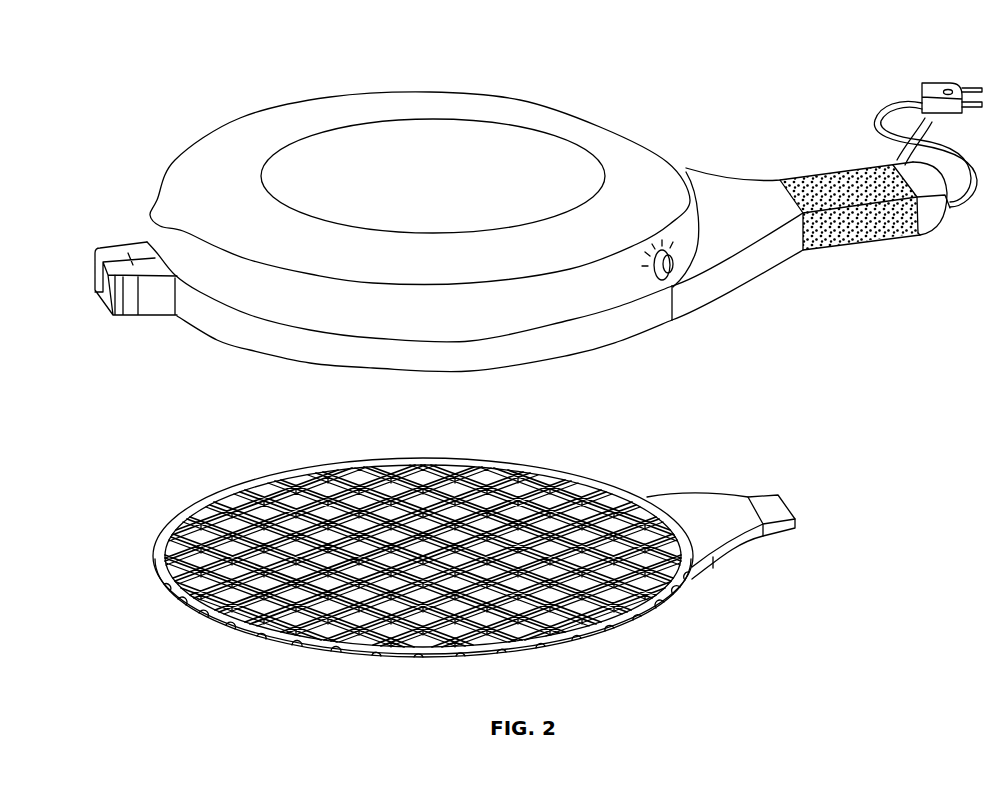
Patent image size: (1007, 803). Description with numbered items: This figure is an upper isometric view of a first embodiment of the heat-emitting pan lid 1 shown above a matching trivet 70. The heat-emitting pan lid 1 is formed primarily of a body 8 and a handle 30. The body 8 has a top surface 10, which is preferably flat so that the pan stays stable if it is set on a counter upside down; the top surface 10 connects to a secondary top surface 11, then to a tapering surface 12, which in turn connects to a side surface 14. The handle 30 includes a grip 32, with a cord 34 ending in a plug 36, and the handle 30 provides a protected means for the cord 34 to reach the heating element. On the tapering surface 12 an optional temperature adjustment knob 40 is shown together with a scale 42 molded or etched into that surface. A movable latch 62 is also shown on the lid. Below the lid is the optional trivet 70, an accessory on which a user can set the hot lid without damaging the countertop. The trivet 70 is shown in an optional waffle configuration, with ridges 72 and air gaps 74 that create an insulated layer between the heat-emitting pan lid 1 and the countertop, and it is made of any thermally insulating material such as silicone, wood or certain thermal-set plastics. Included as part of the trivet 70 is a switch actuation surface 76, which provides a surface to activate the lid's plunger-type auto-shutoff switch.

The heat-emitting pan lid 1 is at (722, 86).
The body 8 is at (224, 128).
The top surface 10 is at (343, 152).
The secondary top surface 11 is at (230, 187).
The tapering surface 12 is at (160, 215).
The side surface 14 is at (262, 328).
The handle 30 is at (769, 282).
The grip 32 is at (877, 232).
The cord 34 is at (973, 163).
The plug 36 is at (950, 89).
The temperature adjustment knob 40 is at (670, 278).
The scale 42 is at (650, 268).
The movable latch 62 is at (103, 272).
The trivet 70 is at (697, 598).
The ridges 72 is at (550, 488).
The air gaps 74 is at (520, 487).
The switch actuation surface 76 is at (715, 508).